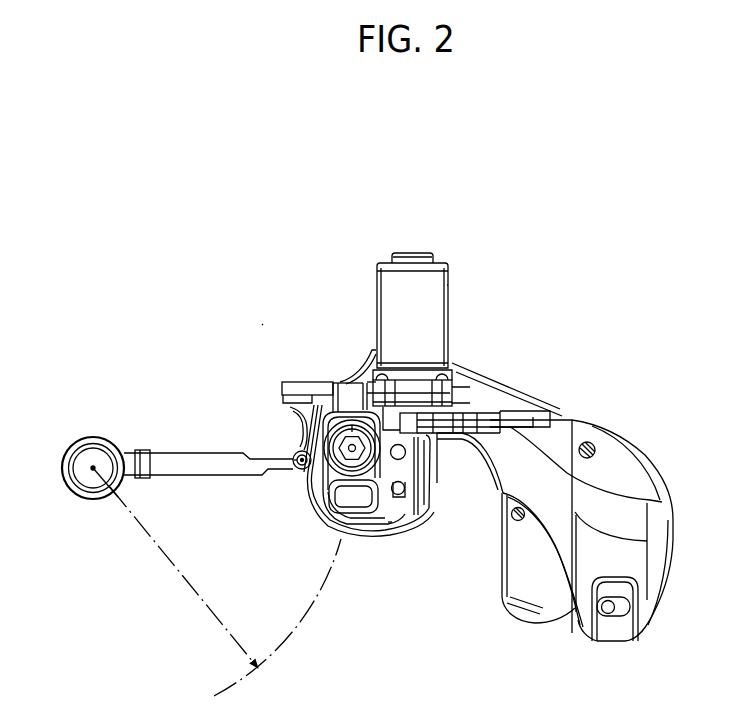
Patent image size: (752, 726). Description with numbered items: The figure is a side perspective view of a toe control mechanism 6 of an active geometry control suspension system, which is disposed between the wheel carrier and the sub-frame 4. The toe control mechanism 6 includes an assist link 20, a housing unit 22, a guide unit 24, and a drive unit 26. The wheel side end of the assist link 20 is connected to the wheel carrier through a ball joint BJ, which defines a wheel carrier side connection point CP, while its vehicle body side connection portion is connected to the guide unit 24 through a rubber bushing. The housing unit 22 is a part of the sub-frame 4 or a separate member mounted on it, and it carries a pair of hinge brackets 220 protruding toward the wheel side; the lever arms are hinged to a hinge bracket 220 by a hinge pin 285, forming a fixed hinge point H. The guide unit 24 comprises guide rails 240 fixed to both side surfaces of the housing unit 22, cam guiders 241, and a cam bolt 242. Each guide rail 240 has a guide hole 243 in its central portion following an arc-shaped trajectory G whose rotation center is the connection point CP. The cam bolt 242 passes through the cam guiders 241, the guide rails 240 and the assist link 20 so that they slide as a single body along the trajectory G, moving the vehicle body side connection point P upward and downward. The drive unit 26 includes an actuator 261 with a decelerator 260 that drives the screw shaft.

The toe control mechanism 6 is at (263, 325).
The housing unit 22 is at (336, 375).
The drive unit 26 is at (468, 313).
The actuator 261 is at (449, 285).
The decelerator 260 is at (460, 392).
The sub-frame 4 is at (620, 452).
The ball joint BJ is at (85, 437).
The assist link 20 is at (195, 454).
The hinge bracket 220 is at (299, 452).
The fixed hinge point H is at (292, 466).
The wheel carrier side connection point CP is at (90, 471).
The hinge pin 285 is at (316, 489).
The guide unit 24 is at (336, 503).
The guide hole 243 is at (325, 530).
The guide rail 240 is at (348, 530).
The vehicle body side connection point P is at (393, 530).
The cam guider 241 is at (412, 525).
The cam bolt 242 is at (360, 455).
The arc-shaped trajectory G is at (300, 627).